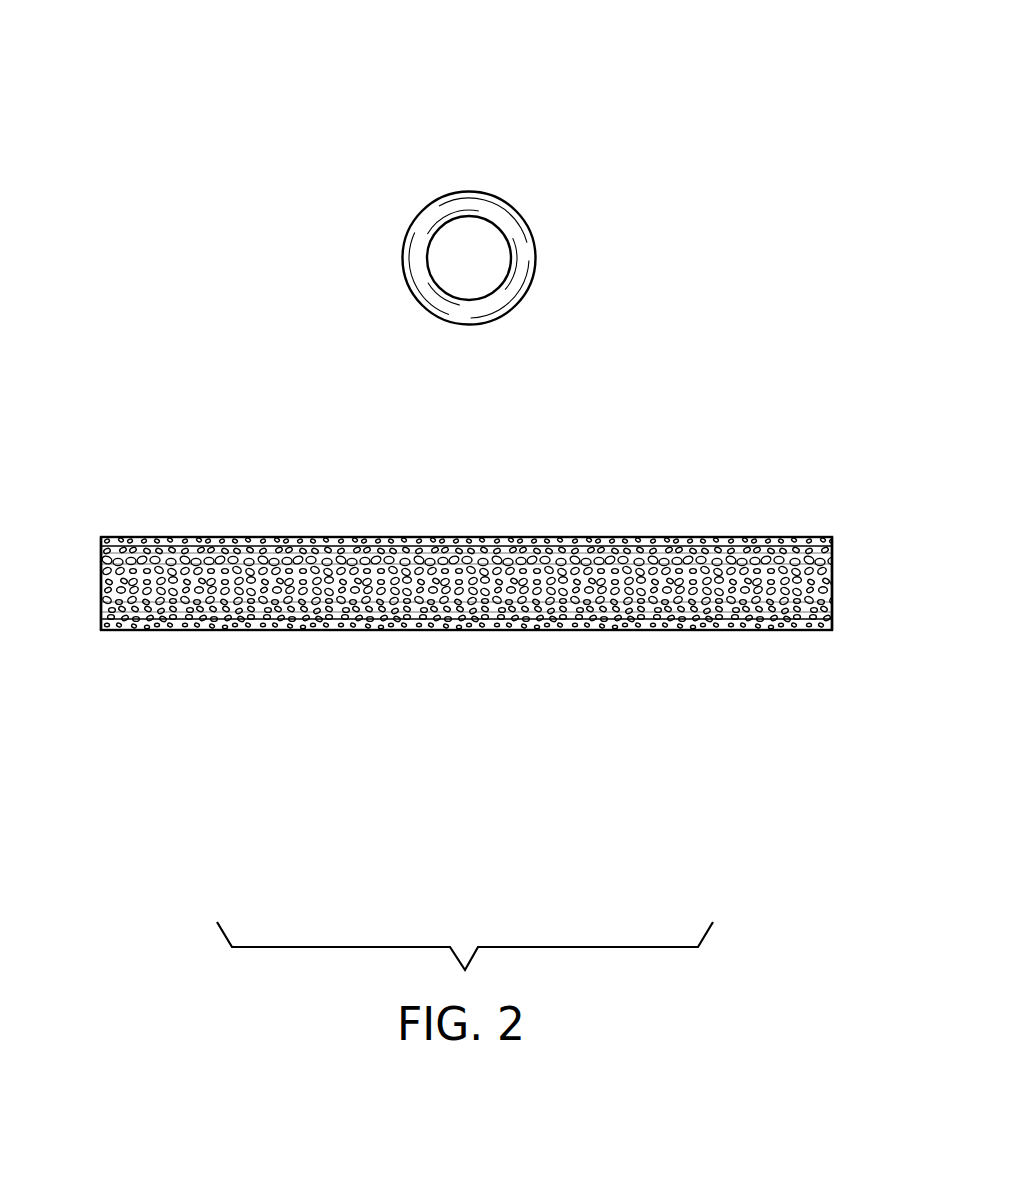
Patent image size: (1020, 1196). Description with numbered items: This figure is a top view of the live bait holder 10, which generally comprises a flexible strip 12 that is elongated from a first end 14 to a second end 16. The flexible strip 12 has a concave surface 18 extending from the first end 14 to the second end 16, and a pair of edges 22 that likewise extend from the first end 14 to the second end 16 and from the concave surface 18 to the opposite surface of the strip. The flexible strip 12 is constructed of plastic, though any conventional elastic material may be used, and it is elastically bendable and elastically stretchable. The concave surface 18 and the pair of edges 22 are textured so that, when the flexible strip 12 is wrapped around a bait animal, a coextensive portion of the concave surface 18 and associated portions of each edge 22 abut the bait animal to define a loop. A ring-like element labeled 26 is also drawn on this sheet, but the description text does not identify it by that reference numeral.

The live bait holder 10 is at (456, 132).
The flexible strip 12 is at (473, 590).
The first end 14 is at (100, 582).
The second end 16 is at (832, 580).
The concave surface 18 is at (622, 587).
The pair of edges 22 is at (137, 542).
The ring 26 is at (545, 220).